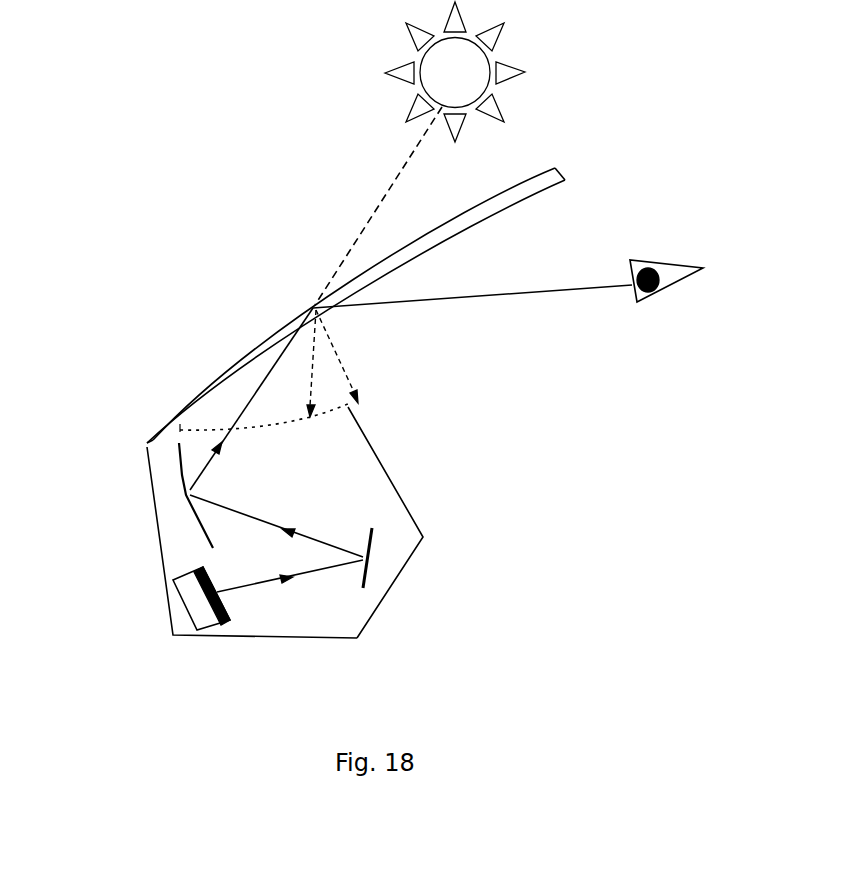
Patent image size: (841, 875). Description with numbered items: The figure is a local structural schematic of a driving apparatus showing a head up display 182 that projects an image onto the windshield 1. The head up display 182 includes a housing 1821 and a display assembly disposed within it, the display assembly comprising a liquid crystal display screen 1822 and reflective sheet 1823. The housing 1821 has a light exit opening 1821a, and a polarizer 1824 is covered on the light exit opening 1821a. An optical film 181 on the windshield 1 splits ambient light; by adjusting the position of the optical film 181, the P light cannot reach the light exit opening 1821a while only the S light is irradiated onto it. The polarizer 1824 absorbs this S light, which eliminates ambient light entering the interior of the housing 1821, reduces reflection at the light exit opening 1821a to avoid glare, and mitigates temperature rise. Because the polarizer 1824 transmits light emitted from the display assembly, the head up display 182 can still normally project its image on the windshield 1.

The windshield 1 is at (233, 364).
The optical film 181 is at (291, 323).
The head up display 182 is at (128, 582).
The housing 1821 is at (415, 520).
The light exit opening 1821a is at (254, 452).
The liquid crystal display screen 1822 is at (212, 623).
The reflective sheet 1823 is at (188, 512).
The polarizer 1824 is at (332, 413).